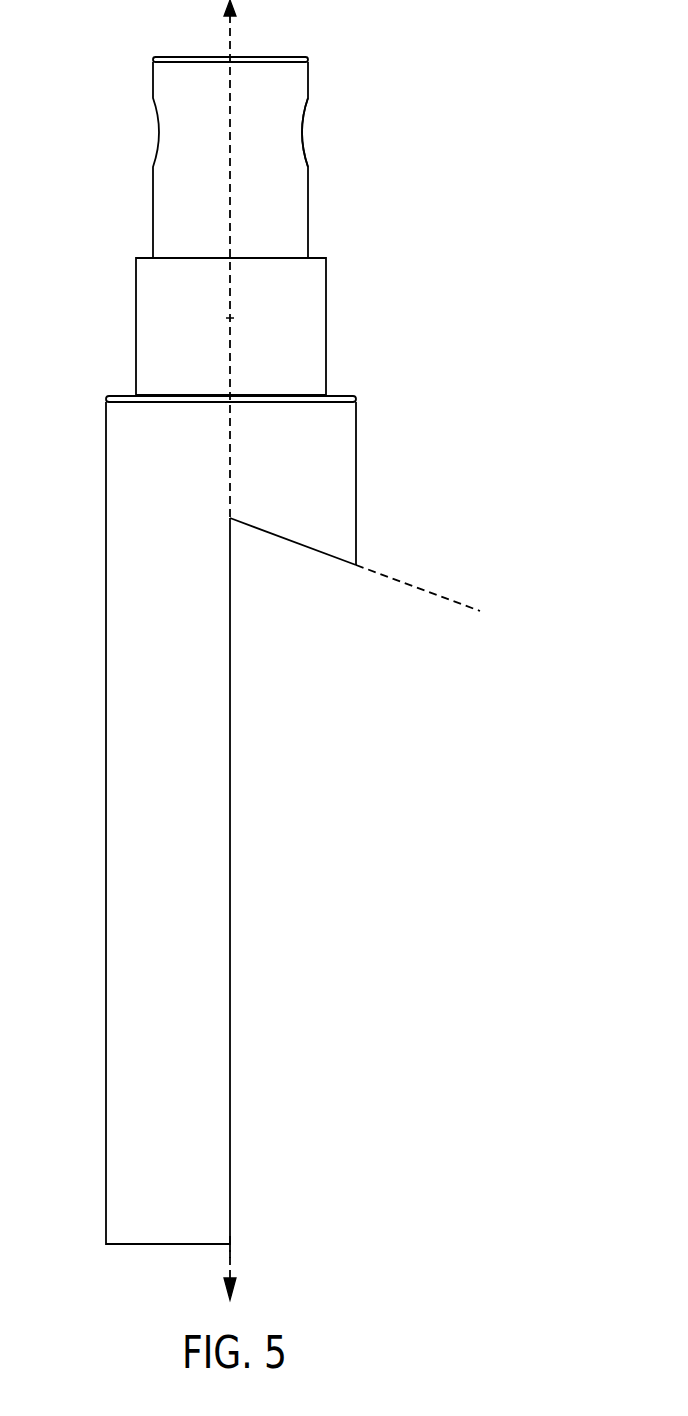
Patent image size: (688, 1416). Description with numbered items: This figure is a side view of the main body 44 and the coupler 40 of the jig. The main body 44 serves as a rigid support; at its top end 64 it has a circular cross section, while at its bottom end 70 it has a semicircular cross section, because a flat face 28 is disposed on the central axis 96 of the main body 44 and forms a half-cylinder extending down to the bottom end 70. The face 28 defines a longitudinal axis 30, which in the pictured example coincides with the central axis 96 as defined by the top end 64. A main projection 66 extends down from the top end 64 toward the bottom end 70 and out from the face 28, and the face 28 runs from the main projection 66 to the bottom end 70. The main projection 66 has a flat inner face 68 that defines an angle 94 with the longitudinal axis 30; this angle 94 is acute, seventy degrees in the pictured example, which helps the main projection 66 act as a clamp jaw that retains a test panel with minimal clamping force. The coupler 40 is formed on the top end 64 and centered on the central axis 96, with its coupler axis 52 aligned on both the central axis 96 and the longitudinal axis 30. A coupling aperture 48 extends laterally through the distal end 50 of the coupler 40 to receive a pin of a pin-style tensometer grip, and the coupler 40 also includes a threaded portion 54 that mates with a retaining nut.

The face 28 is at (235, 951).
The longitudinal axis 30 is at (232, 1256).
The coupler 40 is at (283, 197).
The main body 44 is at (187, 823).
The coupling aperture 48 is at (302, 133).
The distal end 50 is at (270, 134).
The coupler axis 52 is at (225, 38).
The threaded portion 54 is at (147, 310).
The top end 64 is at (260, 465).
The main projection 66 is at (335, 512).
The inner face 68 is at (300, 548).
The bottom end 70 is at (237, 1236).
The angle 94 is at (232, 767).
The central axis 96 is at (232, 318).